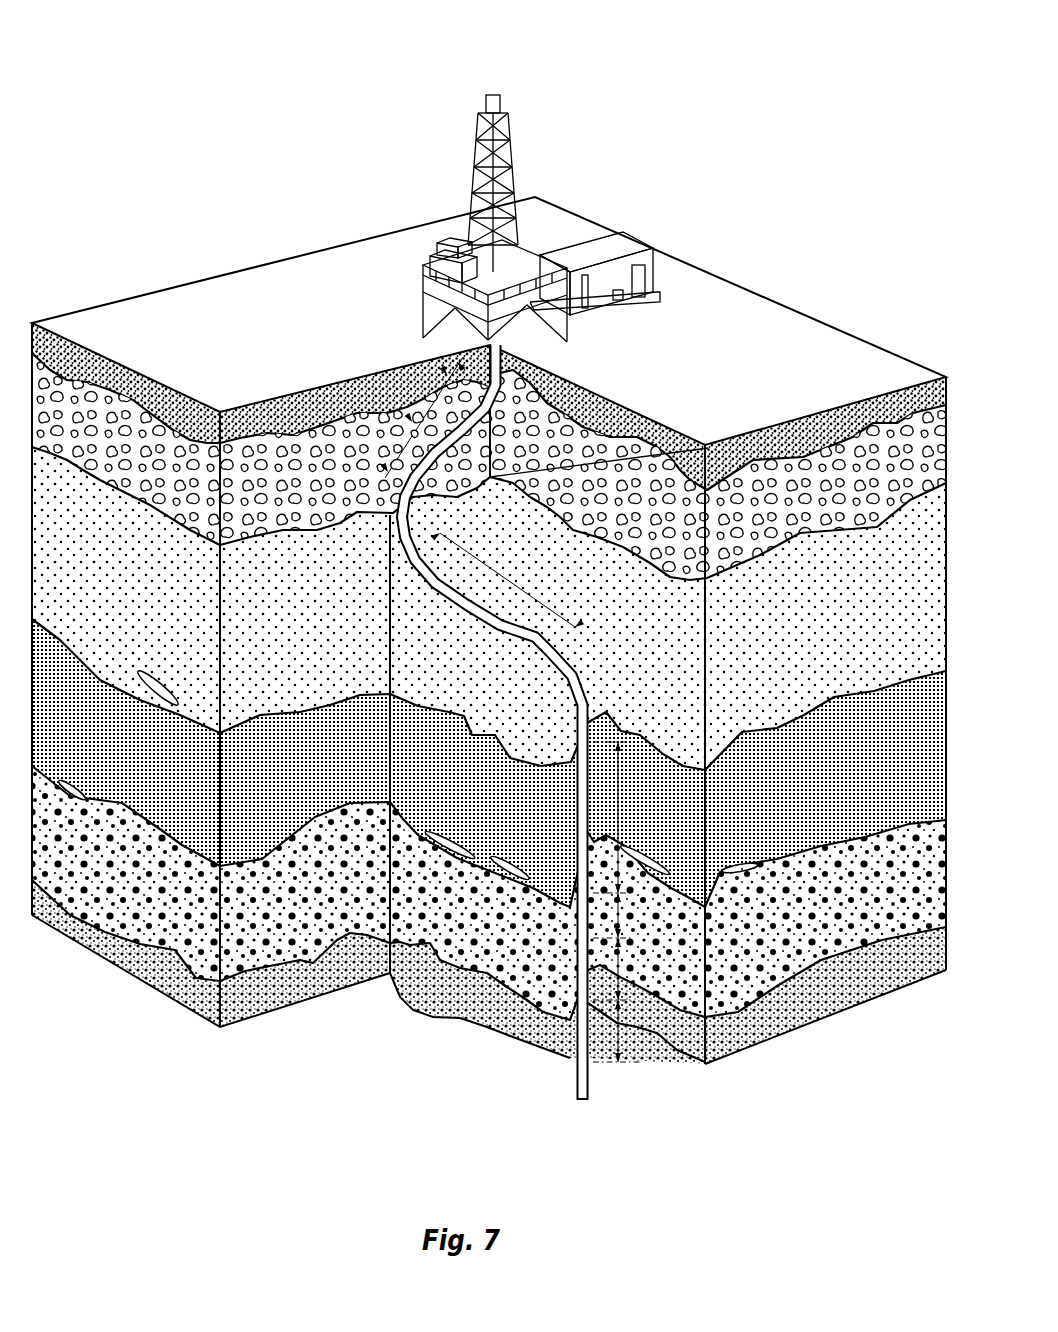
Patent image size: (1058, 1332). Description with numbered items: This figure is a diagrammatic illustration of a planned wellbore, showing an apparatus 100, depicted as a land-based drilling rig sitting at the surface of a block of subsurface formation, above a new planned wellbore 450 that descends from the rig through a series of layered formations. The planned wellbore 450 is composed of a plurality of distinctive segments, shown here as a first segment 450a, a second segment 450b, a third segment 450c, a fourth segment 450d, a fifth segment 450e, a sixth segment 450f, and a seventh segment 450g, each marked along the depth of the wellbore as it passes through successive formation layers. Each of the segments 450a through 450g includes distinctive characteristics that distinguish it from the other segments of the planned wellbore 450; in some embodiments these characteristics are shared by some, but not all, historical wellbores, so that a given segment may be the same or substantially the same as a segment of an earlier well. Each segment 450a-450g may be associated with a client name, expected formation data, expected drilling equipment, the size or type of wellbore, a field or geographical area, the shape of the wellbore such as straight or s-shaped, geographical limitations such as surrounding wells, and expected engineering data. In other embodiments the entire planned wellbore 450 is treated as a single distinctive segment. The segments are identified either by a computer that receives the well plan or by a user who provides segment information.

The apparatus 100 is at (430, 112).
The planned wellbore 450 is at (640, 428).
The first segment 450a is at (458, 357).
The second segment 450b is at (395, 453).
The third segment 450c is at (512, 578).
The fourth segment 450d is at (624, 824).
The fifth segment 450e is at (624, 917).
The sixth segment 450f is at (624, 972).
The seventh segment 450g is at (624, 1037).